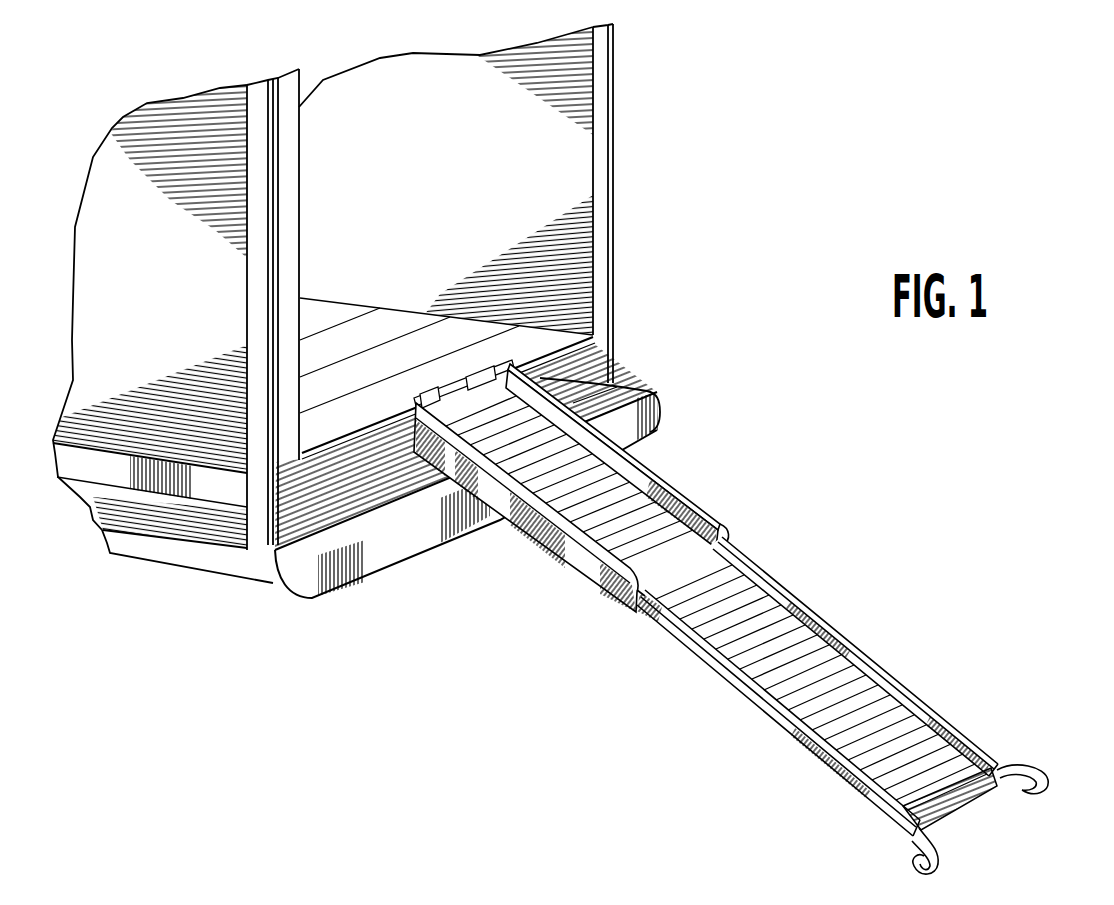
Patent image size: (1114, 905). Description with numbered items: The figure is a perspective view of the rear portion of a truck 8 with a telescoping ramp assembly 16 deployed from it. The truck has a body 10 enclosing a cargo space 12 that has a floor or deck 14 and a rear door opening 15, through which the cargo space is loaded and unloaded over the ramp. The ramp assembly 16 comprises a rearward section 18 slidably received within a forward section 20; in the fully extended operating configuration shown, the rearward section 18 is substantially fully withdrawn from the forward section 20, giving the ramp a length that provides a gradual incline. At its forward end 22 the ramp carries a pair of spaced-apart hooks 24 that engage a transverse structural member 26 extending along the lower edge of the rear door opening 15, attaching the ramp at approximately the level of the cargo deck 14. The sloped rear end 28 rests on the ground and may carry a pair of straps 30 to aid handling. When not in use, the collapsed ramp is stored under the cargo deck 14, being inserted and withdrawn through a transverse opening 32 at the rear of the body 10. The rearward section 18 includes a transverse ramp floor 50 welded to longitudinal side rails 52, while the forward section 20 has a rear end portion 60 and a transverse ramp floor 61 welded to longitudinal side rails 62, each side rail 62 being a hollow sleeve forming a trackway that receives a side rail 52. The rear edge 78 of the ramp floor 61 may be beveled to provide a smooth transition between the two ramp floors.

The truck 8 is at (375, 315).
The body 10 is at (615, 170).
The cargo space 12 is at (595, 100).
The floor or deck 14 is at (555, 338).
The rear door opening 15 is at (300, 105).
The telescoping ramp assembly 16 is at (721, 595).
The rearward section 18 is at (868, 705).
The forward section 20 is at (545, 466).
The forward end 22 is at (467, 387).
The hooks 24 is at (437, 397).
The transverse structural member 26 is at (342, 448).
The sloped rear end 28 is at (955, 800).
The straps 30 is at (912, 860).
The transverse opening 32 is at (425, 440).
The transverse ramp floor 50 is at (875, 690).
The longitudinal side rails 52 is at (840, 760).
The rear end portion 60 is at (560, 378).
The transverse ramp floor 61 is at (620, 480).
The longitudinal side rails 62 is at (615, 580).
The rear edge 78 is at (685, 565).